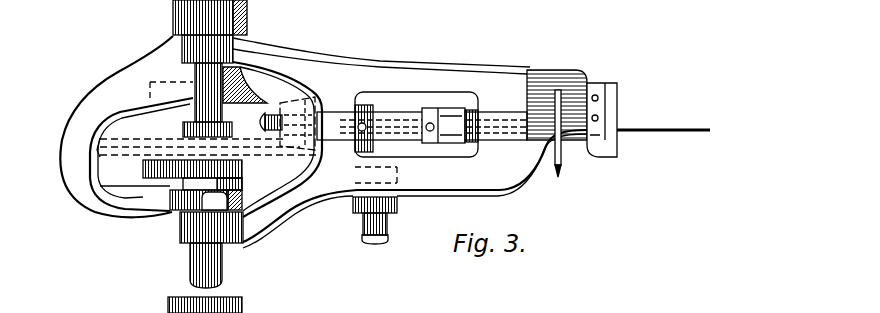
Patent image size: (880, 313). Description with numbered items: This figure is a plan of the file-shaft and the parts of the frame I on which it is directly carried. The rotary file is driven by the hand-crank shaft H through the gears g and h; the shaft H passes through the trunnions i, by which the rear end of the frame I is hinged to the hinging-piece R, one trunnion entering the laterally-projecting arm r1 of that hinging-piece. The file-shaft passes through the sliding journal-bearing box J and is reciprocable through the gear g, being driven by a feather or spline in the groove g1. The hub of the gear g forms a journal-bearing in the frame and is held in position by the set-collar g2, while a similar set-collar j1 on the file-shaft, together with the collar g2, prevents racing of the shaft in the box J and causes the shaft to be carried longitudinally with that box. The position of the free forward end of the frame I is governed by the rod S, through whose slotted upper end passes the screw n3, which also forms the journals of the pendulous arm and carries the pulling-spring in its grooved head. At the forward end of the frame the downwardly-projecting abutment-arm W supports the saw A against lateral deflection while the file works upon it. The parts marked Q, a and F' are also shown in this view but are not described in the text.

The hinging-piece R is at (126, 126).
The trunnions i is at (248, 22).
The clamping plate Q is at (147, 168).
The laterally-projecting arm r1 is at (181, 194).
The hand-crank shaft H is at (220, 257).
The gear h is at (290, 153).
The gear g is at (298, 100).
The frame I is at (410, 143).
The sliding journal-bearing box J is at (460, 150).
The shaft a is at (408, 110).
The set-collar g2 is at (368, 108).
The groove g1 is at (407, 118).
The set-collar j1 is at (515, 68).
The pointer F' is at (576, 143).
The abutment-arm W is at (610, 148).
The saw A is at (697, 121).
The rod S is at (351, 218).
The screw n3 is at (373, 241).